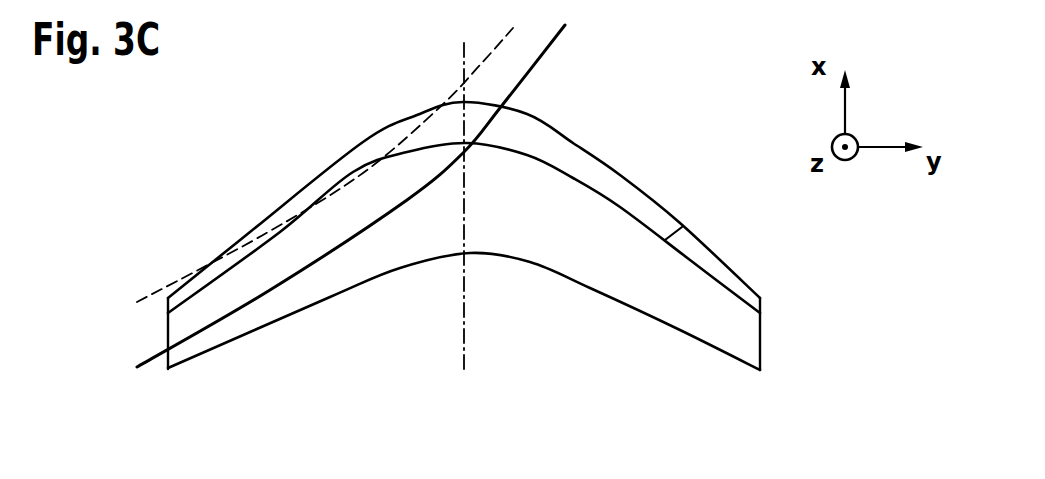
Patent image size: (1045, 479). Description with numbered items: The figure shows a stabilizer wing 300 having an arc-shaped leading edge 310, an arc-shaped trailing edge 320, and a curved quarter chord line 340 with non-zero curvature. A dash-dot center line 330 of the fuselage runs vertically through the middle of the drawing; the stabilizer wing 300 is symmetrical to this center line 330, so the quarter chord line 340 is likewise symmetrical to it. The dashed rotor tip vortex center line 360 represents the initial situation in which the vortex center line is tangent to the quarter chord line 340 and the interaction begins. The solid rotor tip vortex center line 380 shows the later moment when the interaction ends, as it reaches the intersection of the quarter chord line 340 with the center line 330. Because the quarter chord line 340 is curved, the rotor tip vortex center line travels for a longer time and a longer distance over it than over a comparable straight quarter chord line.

The stabilizer wing 300 is at (603, 107).
The arc-shaped leading edge 310 is at (612, 170).
The arc-shaped trailing edge 320 is at (373, 280).
The center line 330 is at (464, 355).
The quarter chord line 340 is at (683, 228).
The rotor tip vortex center line 360 is at (455, 95).
The rotor tip vortex center line 380 is at (278, 292).